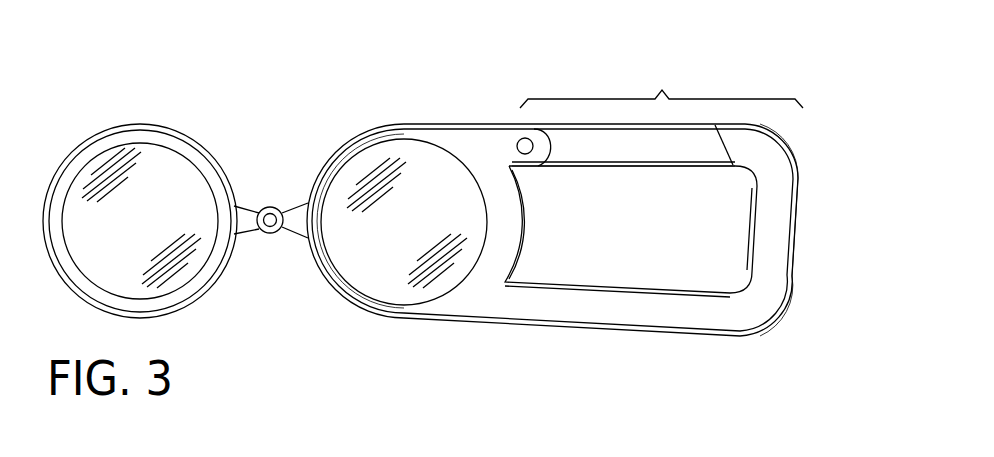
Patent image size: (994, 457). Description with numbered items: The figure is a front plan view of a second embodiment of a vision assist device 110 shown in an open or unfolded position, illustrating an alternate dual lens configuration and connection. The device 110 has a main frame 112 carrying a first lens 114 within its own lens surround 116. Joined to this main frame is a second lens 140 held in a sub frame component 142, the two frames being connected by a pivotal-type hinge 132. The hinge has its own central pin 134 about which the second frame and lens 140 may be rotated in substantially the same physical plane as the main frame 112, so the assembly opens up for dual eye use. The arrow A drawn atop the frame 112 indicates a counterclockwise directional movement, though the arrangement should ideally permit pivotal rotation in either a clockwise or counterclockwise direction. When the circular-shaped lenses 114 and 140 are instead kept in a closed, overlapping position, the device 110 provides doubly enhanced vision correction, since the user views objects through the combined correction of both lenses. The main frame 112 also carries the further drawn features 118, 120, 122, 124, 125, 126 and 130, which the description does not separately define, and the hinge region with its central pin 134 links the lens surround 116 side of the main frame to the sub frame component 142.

The device 110 is at (413, 97).
The main frame 112 is at (620, 323).
The first lens 114 is at (430, 235).
The lens surround 116 is at (347, 140).
The opening 118 is at (530, 240).
The handle portion 120 is at (661, 80).
The tab 122 is at (548, 133).
The opening edge 124 is at (660, 166).
The aperture 125 is at (517, 138).
The end portion 126 is at (786, 166).
The first hinge arm 130 is at (317, 237).
The pivotal-type hinge 132 is at (242, 230).
The central pin 134 is at (268, 208).
The second lens 140 is at (164, 234).
The sub frame component 142 is at (113, 132).
The arrow A is at (335, 73).